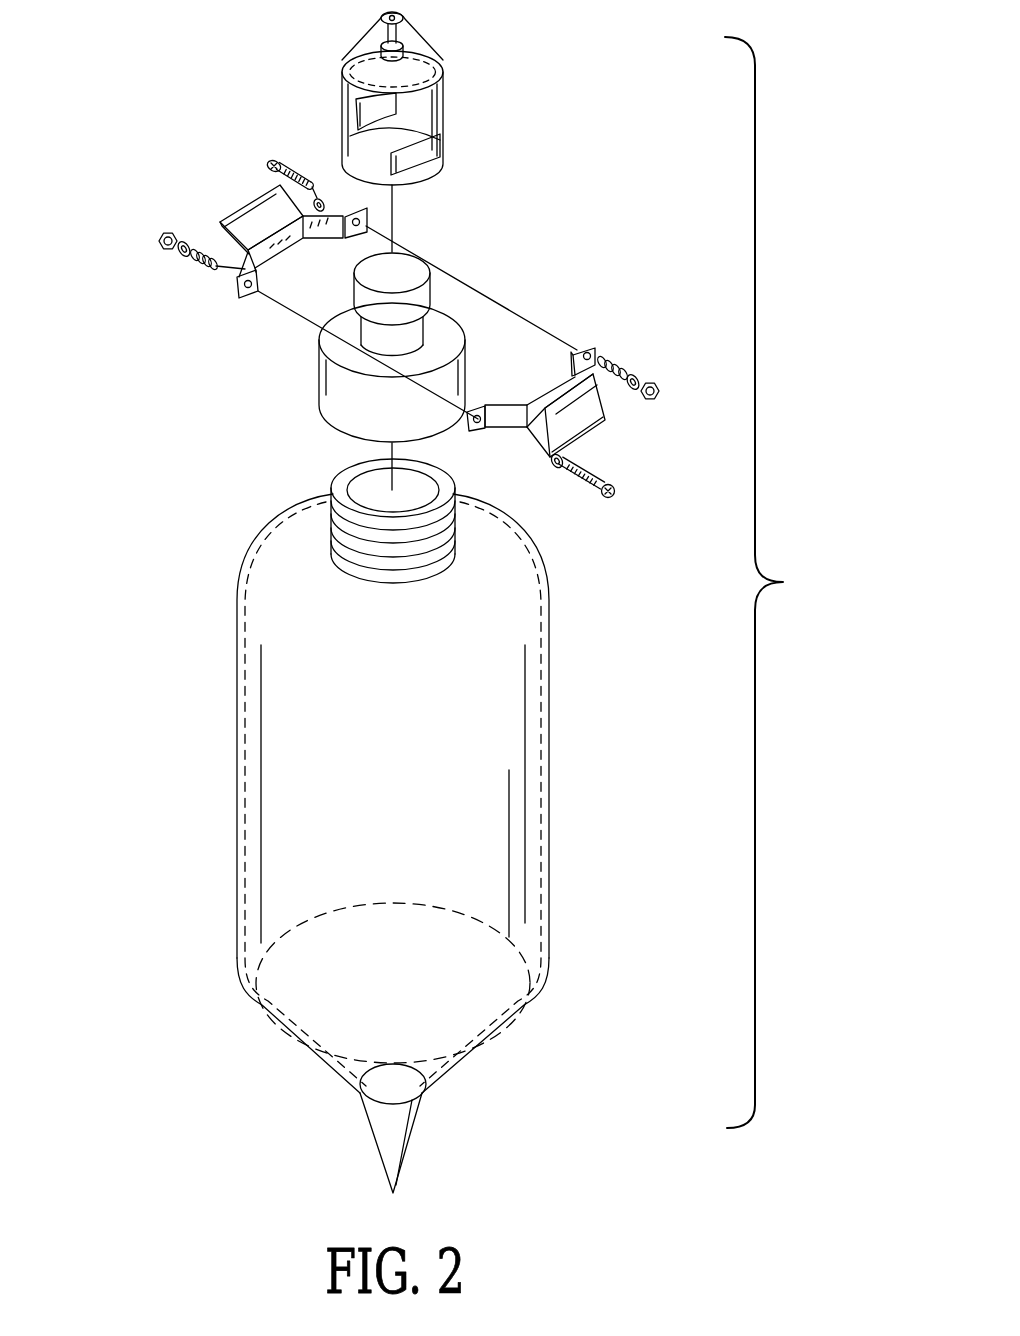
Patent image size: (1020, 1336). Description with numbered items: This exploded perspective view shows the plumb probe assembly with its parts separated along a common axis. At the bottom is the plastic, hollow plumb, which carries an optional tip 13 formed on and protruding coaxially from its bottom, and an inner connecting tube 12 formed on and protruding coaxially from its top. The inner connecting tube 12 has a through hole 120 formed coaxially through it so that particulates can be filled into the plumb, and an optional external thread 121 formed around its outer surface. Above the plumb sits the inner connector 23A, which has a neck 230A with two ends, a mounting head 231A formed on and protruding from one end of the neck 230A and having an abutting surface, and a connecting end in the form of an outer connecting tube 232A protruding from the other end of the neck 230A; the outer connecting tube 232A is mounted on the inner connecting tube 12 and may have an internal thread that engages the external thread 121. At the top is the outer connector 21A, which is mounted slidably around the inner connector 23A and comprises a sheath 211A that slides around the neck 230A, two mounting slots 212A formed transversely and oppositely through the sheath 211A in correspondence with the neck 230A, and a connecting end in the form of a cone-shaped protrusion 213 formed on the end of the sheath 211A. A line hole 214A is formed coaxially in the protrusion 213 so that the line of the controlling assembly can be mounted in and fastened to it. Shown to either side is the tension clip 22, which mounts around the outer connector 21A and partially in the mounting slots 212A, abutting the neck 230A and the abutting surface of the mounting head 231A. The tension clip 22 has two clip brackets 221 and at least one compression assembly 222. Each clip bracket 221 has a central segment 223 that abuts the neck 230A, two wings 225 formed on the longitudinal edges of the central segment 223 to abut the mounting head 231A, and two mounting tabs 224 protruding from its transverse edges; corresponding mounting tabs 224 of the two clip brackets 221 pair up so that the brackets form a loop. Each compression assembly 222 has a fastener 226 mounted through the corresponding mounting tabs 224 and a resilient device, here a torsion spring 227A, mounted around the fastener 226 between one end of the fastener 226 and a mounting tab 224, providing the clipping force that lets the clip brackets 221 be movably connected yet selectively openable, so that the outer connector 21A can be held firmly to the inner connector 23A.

The inner connecting tube 12 is at (421, 826).
The through hole 120 is at (513, 517).
The external thread 121 is at (395, 572).
The tip 13 is at (418, 1128).
The outer connector 21A is at (435, 99).
The sheath 211A is at (448, 104).
The mounting slot 212A is at (443, 137).
The conical top 213 is at (432, 42).
The line hole 214A is at (381, 22).
The tension clip 22 is at (617, 384).
The clip bracket 221 is at (605, 433).
The compression assembly 222 is at (615, 358).
The central segment 223 is at (267, 250).
The mounting tab 224 is at (240, 303).
The wing 225 is at (277, 205).
The fastener 226 is at (588, 484).
The torsion spring 227A is at (200, 268).
The inner connector 23A is at (357, 342).
The neck 230A is at (425, 328).
The mounting head 231A is at (430, 276).
The outer connecting tube 232A is at (337, 413).